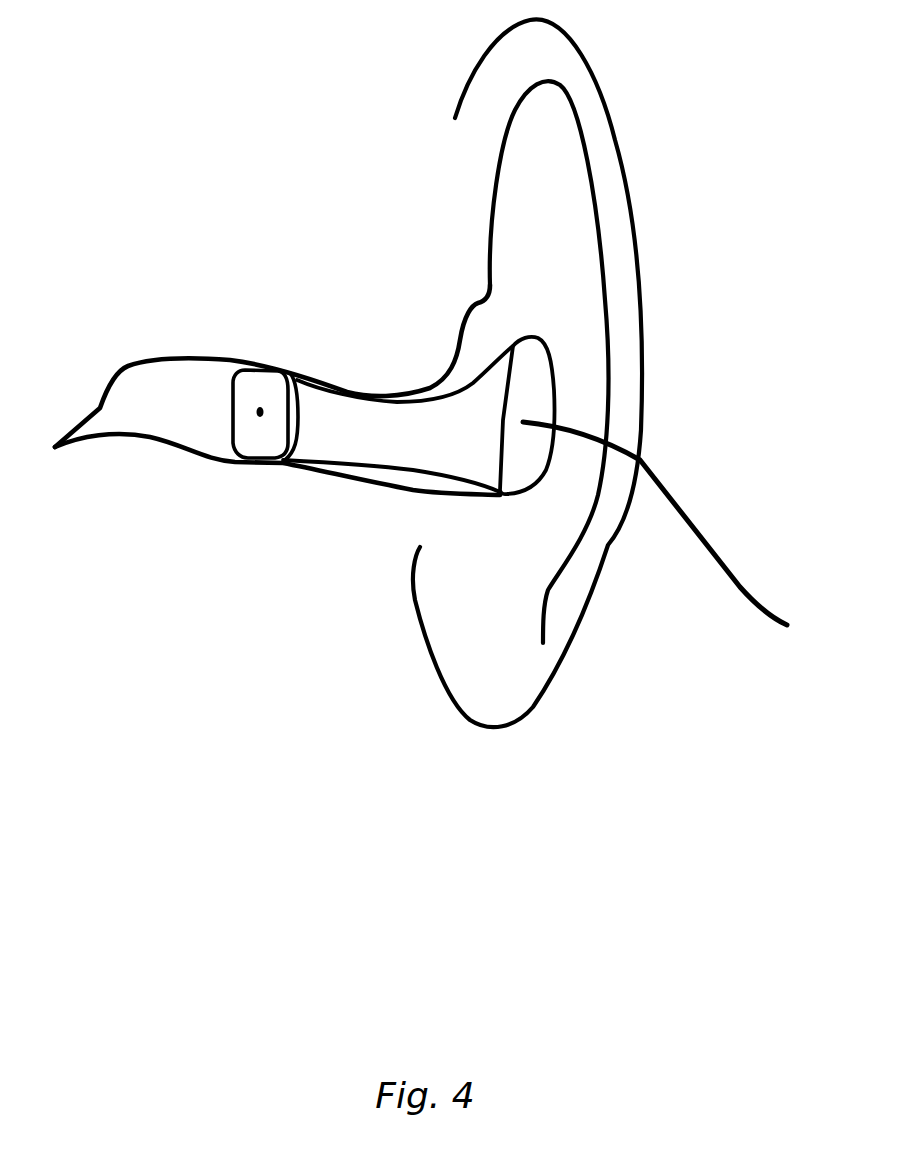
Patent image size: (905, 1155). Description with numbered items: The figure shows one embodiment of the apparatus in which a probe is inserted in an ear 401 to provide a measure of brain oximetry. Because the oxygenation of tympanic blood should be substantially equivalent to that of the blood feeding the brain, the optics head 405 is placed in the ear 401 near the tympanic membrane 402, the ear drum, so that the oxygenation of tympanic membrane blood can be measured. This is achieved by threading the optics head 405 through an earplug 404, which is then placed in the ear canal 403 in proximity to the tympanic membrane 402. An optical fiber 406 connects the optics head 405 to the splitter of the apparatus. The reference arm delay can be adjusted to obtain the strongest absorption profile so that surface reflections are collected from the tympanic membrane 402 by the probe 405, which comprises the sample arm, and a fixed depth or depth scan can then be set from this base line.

The ear 401 is at (510, 727).
The tympanic membrane 402 is at (98, 408).
The ear canal 403 is at (280, 460).
The earplug 404 is at (533, 335).
The optics head 405 is at (252, 395).
The optical fiber 406 is at (713, 540).